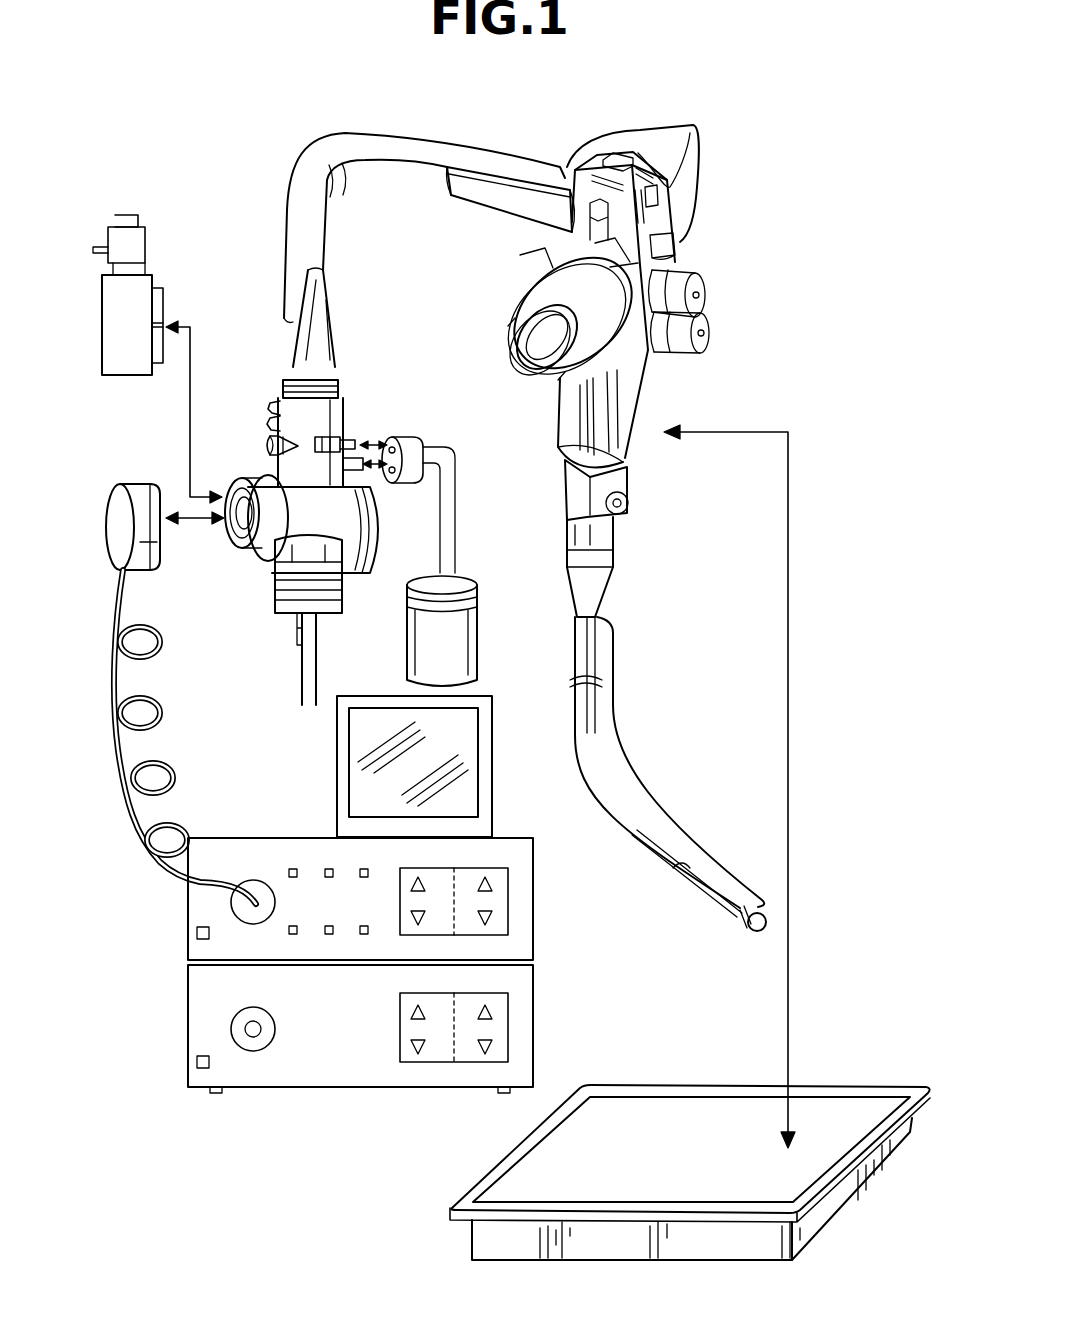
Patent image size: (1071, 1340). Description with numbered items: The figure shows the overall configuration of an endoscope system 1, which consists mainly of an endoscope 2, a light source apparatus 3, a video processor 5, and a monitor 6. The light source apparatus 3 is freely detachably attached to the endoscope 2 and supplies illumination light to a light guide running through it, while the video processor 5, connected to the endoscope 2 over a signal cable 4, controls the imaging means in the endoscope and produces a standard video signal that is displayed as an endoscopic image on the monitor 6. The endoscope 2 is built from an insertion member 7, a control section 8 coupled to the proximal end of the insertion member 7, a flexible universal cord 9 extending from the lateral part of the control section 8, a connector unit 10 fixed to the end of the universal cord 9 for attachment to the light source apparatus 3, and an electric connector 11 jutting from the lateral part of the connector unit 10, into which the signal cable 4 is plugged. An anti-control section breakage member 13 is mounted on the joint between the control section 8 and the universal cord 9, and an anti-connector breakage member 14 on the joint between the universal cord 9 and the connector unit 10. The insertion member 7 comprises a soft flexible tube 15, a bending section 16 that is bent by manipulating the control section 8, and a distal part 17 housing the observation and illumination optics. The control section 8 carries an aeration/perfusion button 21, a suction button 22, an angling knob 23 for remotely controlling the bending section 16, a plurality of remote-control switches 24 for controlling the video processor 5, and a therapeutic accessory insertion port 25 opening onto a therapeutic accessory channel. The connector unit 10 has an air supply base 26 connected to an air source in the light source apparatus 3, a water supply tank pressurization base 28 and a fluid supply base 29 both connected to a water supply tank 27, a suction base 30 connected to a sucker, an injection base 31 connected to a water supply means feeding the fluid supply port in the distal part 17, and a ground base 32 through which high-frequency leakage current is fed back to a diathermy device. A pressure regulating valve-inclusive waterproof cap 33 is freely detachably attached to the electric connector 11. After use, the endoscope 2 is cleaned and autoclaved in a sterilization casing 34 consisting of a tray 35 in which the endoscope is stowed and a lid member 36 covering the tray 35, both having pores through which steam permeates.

The endoscope system 1 is at (722, 232).
The endoscope 2 is at (664, 378).
The light source apparatus 3 is at (188, 1030).
The signal cable 4 is at (161, 711).
The video processor 5 is at (188, 923).
The monitor 6 is at (493, 785).
The insertion member 7 is at (668, 805).
The control section 8 is at (628, 406).
The universal cord 9 is at (470, 148).
The connector unit 10 is at (344, 534).
The electric connector 11 is at (233, 552).
The anti-control section breakage member 13 is at (485, 212).
The anti-connector breakage member 14 is at (300, 353).
The flexible tube 15 is at (628, 833).
The bending section 16 is at (698, 893).
The distal part 17 is at (743, 930).
The aeration/perfusion button 21 is at (711, 336).
The suction button 22 is at (706, 297).
The angling knob 23 is at (512, 297).
The remote-control switches 24 is at (645, 153).
The therapeutic accessory insertion port 25 is at (600, 590).
The air supply base 26 is at (296, 633).
The water supply tank 27 is at (418, 657).
The water supply tank pressurization base 28 is at (360, 438).
The fluid supply base 29 is at (365, 471).
The suction base 30 is at (263, 440).
The injection base 31 is at (273, 398).
The ground base 32 is at (629, 503).
The pressure regulating valve-inclusive waterproof cap 33 is at (155, 283).
The sterilization casing 34 is at (690, 1150).
The tray 35 is at (842, 1210).
The lid member 36 is at (678, 1118).